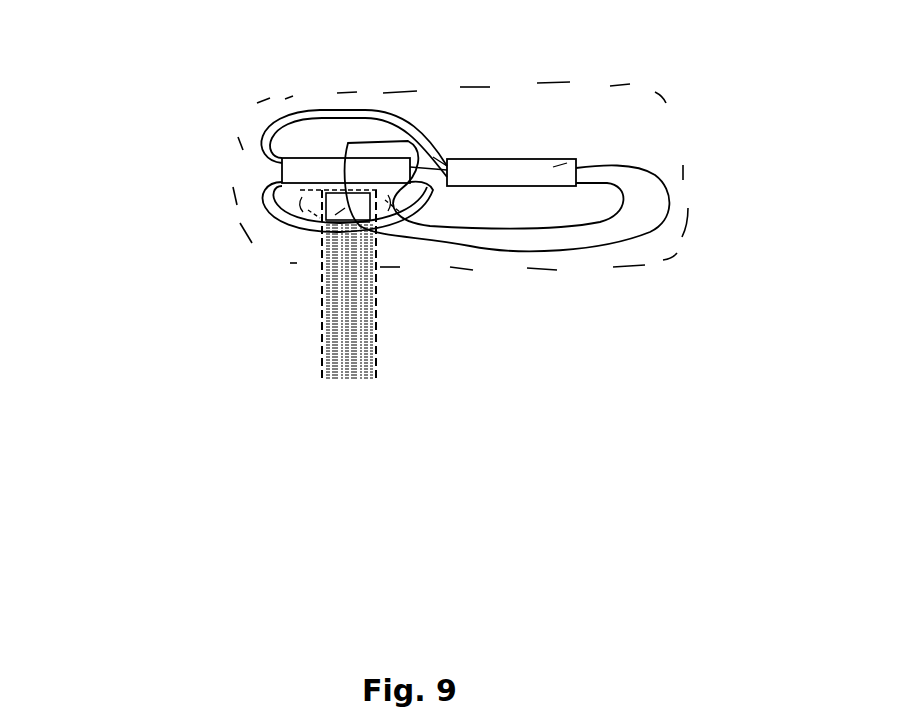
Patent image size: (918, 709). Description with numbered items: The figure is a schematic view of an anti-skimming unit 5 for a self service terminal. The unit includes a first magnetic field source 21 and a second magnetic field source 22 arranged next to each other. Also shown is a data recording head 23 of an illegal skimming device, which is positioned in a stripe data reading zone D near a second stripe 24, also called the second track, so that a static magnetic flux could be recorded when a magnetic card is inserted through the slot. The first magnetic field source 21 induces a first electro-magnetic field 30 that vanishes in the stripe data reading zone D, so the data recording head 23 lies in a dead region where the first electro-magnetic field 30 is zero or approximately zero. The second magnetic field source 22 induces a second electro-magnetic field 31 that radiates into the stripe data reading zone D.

The fastening device 5 is at (563, 110).
The stripe data reading zone D is at (310, 205).
The first magnetic field source 21 is at (303, 152).
The second magnetic field source 22 is at (573, 157).
The data recording head 23 is at (318, 232).
The second stripe 24 is at (367, 298).
The first electro-magnetic field 30 is at (253, 205).
The second electro-magnetic field 31 is at (647, 232).